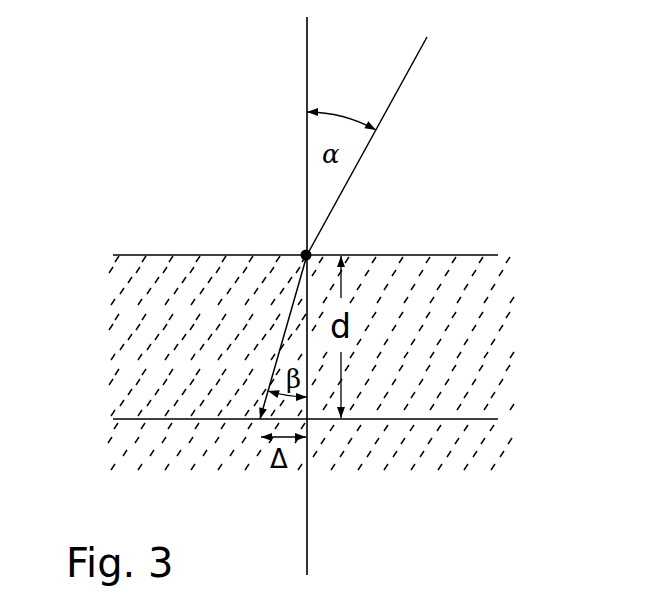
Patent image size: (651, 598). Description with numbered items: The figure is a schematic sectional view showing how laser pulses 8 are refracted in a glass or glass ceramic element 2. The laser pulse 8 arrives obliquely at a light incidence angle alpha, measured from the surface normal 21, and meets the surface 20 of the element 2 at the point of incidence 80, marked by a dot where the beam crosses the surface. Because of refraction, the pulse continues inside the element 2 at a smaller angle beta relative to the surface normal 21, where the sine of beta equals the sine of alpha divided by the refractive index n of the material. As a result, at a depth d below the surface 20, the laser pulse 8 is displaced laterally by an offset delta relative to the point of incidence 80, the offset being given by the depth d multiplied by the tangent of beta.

The glass or glass ceramic element 2 is at (427, 278).
The surface of the substrate 20 is at (184, 254).
The surface normal 21 is at (305, 65).
The laser pulse 8 is at (393, 97).
The point of incidence 80 is at (301, 251).